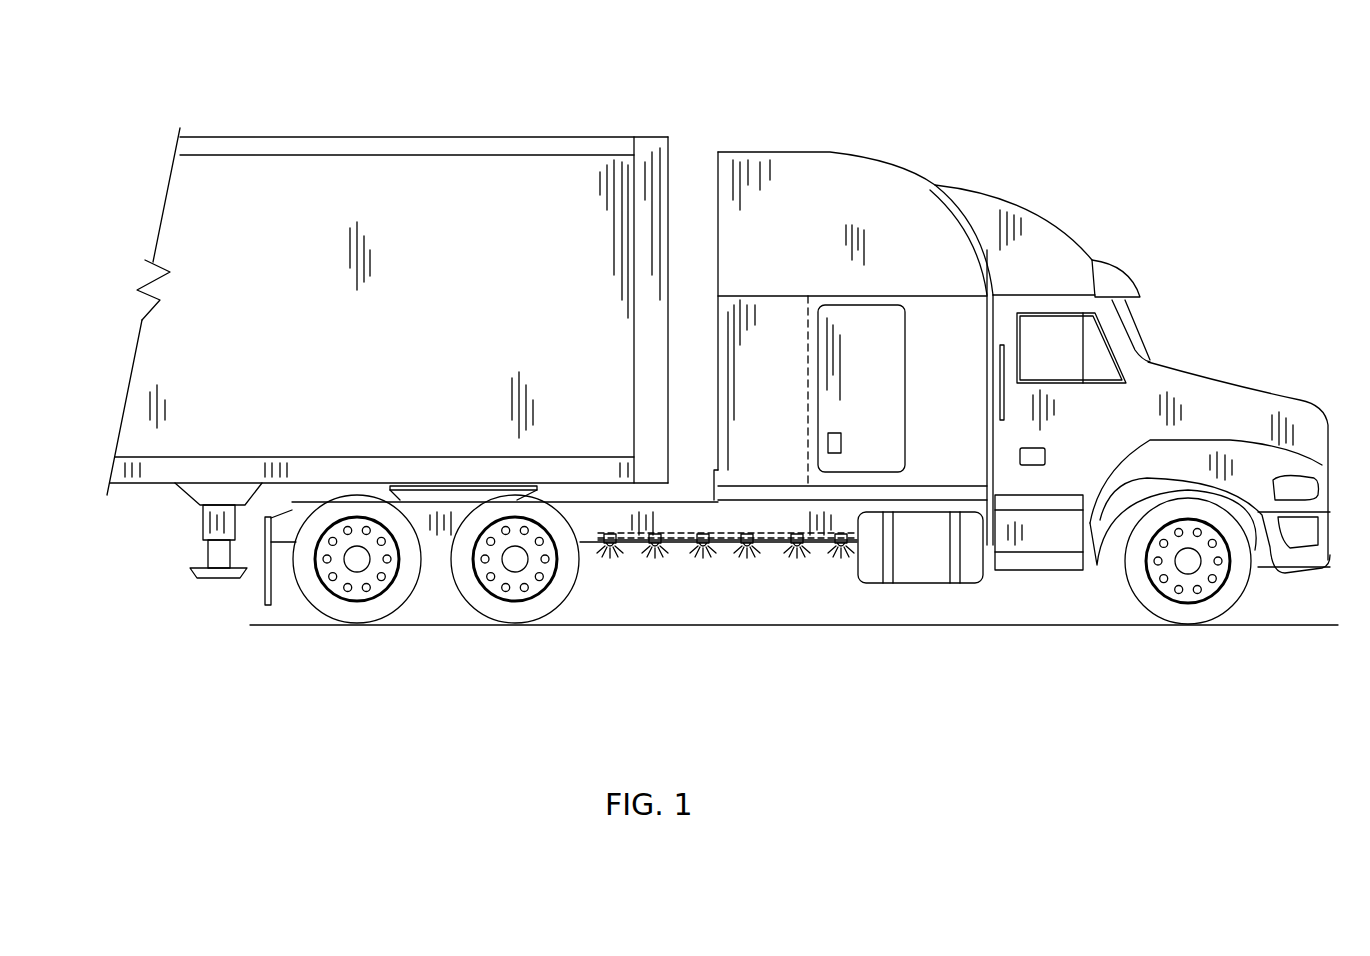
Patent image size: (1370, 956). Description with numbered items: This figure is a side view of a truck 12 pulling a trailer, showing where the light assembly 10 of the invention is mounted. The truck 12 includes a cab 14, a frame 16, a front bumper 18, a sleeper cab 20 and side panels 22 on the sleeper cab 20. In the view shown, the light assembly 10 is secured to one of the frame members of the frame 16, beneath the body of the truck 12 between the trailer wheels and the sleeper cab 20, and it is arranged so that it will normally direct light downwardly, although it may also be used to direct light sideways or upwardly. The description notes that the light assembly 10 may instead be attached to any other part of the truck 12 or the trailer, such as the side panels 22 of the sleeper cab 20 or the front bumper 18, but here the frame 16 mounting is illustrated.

The light assembly 10 is at (729, 550).
The truck 12 is at (1047, 193).
The cab 14 is at (1143, 372).
The frame 16 is at (727, 509).
The front bumper 18 is at (1332, 555).
The sleeper cab 20 is at (849, 183).
The side panels 22 is at (773, 495).